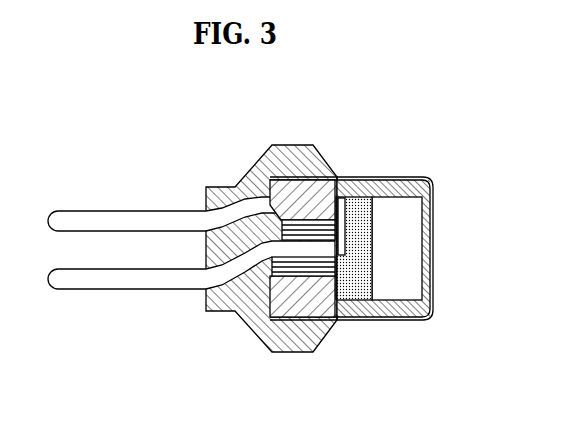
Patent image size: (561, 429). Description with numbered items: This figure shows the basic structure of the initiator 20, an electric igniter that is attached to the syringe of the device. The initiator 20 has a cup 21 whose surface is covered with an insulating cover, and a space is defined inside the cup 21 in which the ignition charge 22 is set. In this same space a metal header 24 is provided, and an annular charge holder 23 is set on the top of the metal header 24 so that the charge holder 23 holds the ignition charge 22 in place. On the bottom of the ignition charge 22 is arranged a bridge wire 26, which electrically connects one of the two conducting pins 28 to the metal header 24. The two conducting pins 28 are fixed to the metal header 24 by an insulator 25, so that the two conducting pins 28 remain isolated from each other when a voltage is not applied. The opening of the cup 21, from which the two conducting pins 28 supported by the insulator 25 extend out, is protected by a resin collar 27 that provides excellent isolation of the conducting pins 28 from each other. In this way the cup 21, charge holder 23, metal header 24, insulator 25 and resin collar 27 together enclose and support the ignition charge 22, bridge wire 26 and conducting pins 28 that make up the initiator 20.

The initiator 20 is at (276, 246).
The cup 21 is at (431, 178).
The ignition charge 22 is at (373, 228).
The charge holder 23 is at (397, 290).
The metal header 24 is at (321, 308).
The insulator 25 is at (297, 224).
The bridge wire 26 is at (345, 173).
The resin collar 27 is at (223, 186).
The conducting pins 28 is at (144, 210).